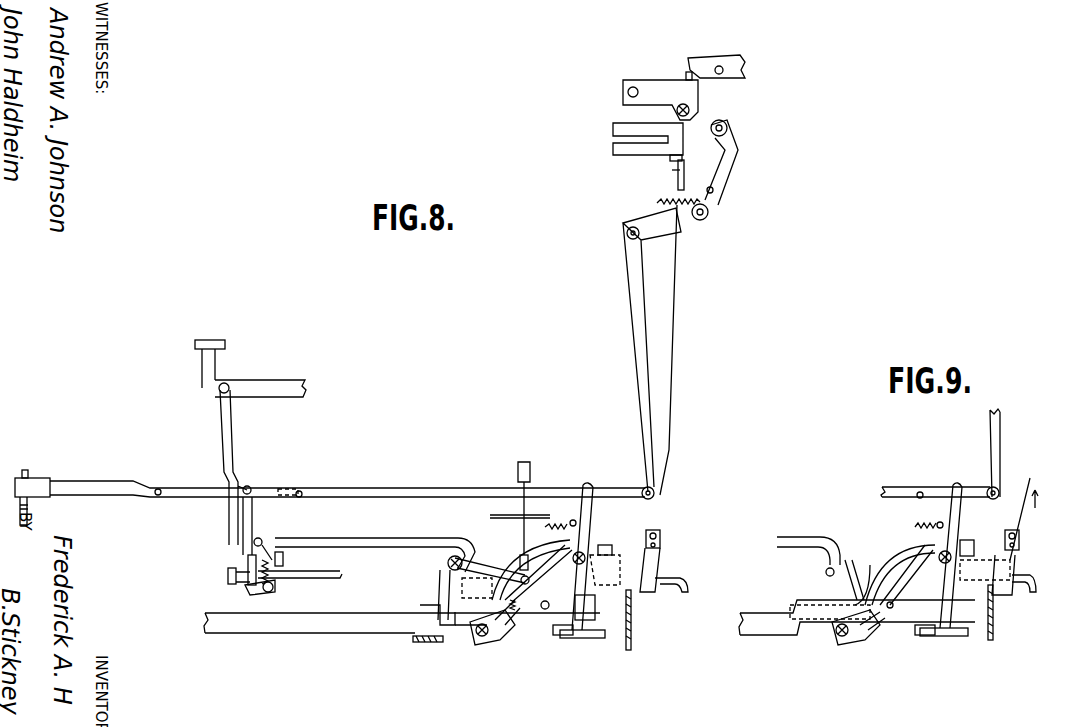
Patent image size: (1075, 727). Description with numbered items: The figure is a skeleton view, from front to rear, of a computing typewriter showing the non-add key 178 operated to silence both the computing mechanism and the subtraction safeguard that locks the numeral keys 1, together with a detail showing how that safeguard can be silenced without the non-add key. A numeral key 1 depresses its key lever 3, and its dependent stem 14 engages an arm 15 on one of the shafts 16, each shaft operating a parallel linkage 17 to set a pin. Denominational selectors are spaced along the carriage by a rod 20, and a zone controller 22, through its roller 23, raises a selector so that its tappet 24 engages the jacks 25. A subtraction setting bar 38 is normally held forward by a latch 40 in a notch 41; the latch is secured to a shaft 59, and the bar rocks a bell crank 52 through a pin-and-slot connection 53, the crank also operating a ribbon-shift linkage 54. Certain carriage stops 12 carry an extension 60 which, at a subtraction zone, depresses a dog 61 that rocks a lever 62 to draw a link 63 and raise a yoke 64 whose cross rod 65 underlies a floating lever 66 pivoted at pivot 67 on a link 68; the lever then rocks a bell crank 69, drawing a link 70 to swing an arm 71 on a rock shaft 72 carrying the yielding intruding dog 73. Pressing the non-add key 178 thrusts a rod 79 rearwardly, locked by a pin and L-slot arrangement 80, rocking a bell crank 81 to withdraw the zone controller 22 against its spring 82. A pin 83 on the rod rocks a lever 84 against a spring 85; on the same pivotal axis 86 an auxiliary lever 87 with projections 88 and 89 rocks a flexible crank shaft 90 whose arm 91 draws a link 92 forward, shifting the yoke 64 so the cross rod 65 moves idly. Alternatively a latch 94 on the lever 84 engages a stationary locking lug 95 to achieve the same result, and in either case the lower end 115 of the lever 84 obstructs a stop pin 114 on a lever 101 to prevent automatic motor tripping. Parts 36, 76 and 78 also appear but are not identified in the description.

In FIG. 8, the numeral keys 1 is at (205, 340).
In FIG. 8, the key levers 3 is at (262, 396).
In FIG. 8, the carriage-carried stops 12 is at (628, 157).
In FIG. 8, the dependent stem 14 is at (227, 527).
In FIG. 8, the arm 15 is at (228, 574).
In FIG. 8, the shafts 16 is at (305, 578).
In FIG. 8, the parallel linkage 17 is at (286, 558).
In FIG. 8, the rod 20 is at (633, 86).
In FIG. 8, the zone controller 22 is at (735, 148).
In FIG. 8, the roller 23 is at (727, 123).
In FIG. 8, the tappet 24 is at (686, 76).
In FIG. 8, the jacks 25 is at (720, 58).
In FIG. 8, the plate 36 is at (428, 642).
In FIG. 8, the subtraction setting bar 38 is at (402, 623).
In FIG. 9, the subtraction setting bar 38 is at (857, 617).
In FIG. 8, the latch 40 is at (505, 640).
In FIG. 9, the latch 40 is at (870, 640).
In FIG. 8, the notch 41 is at (529, 601).
In FIG. 8, the bell crank 52 is at (445, 584).
In FIG. 8, the pin-and-slot connection 53 is at (445, 615).
In FIG. 8, the linkage 54 is at (531, 473).
In FIG. 8, the shaft 59 is at (478, 640).
In FIG. 9, the shaft 59 is at (840, 642).
In FIG. 8, the extension 60 is at (683, 158).
In FIG. 8, the dog 61 is at (672, 170).
In FIG. 8, the lever 62 is at (685, 172).
In FIG. 8, the link 63 is at (678, 299).
In FIG. 9, the link 63 is at (1033, 478).
In FIG. 8, the yoke 64 is at (660, 535).
In FIG. 9, the yoke 64 is at (1020, 537).
In FIG. 8, the cross rod 65 is at (682, 578).
In FIG. 8, the floating lever 66 is at (632, 617).
In FIG. 9, the floating lever 66 is at (880, 568).
In FIG. 8, the pivot 67 is at (560, 548).
In FIG. 9, the pivot 67 is at (915, 555).
In FIG. 8, the link 68 is at (538, 573).
In FIG. 9, the link 68 is at (906, 576).
In FIG. 8, the bell crank 69 is at (477, 589).
In FIG. 9, the bell crank 69 is at (848, 592).
In FIG. 8, the link 70 is at (393, 540).
In FIG. 9, the link 70 is at (808, 534).
In FIG. 8, the arm 71 is at (273, 548).
In FIG. 8, the rock shaft 72 is at (268, 593).
In FIG. 8, the intruding dog 73 is at (252, 590).
In FIG. 8, the slide 76 is at (247, 565).
In FIG. 8, the rod 78 is at (253, 521).
In FIG. 8, the rod 79 is at (395, 487).
In FIG. 9, the rod 79 is at (895, 487).
In FIG. 8, the pin and L-slot arrangement 80 is at (300, 490).
In FIG. 8, the bell crank 81 is at (632, 362).
In FIG. 9, the bell crank 81 is at (1001, 440).
In FIG. 8, the spring 82 is at (665, 203).
In FIG. 8, the pin 83 is at (584, 485).
In FIG. 9, the pin 83 is at (922, 492).
In FIG. 8, the lever 84 is at (574, 521).
In FIG. 9, the lever 84 is at (940, 522).
In FIG. 8, the spring 85 is at (545, 527).
In FIG. 9, the pivotal axis 86 is at (962, 540).
In FIG. 8, the auxiliary lever 87 is at (605, 552).
In FIG. 9, the auxiliary lever 87 is at (975, 550).
In FIG. 8, the projection 88 is at (600, 540).
In FIG. 8, the projection 89 is at (625, 563).
In FIG. 8, the crank shaft 90 is at (605, 545).
In FIG. 9, the crank shaft 90 is at (965, 545).
In FIG. 8, the arm 91 is at (592, 607).
In FIG. 9, the arm 91 is at (977, 567).
In FIG. 9, the link 92 is at (985, 572).
In FIG. 8, the latch 94 is at (658, 555).
In FIG. 9, the latch 94 is at (1016, 575).
In FIG. 9, the stationary locking lug 95 is at (994, 605).
In FIG. 8, the lever 101 is at (585, 638).
In FIG. 9, the lever 101 is at (955, 636).
In FIG. 8, the stop pin 114 is at (560, 635).
In FIG. 9, the stop pin 114 is at (922, 638).
In FIG. 8, the lower end 115 is at (582, 602).
In FIG. 9, the lower end 115 is at (947, 608).
In FIG. 8, the non-add key 178 is at (50, 473).